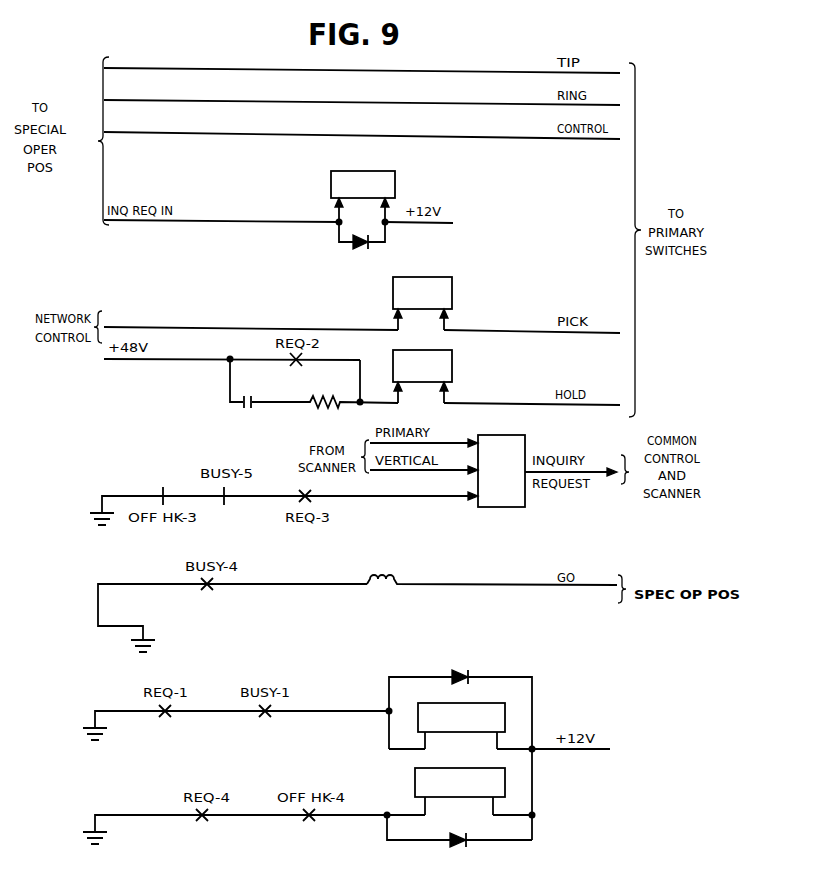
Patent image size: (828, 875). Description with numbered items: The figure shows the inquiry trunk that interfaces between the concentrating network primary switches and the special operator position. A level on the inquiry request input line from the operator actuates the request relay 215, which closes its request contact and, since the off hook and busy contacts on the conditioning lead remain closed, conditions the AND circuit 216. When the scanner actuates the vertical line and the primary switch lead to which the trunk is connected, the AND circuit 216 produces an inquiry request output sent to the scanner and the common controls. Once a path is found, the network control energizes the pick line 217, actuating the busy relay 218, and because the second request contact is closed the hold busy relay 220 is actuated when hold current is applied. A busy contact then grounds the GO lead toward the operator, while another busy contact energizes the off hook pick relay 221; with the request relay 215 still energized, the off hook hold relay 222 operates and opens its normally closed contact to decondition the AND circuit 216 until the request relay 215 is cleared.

The request relay 215 is at (331, 198).
The AND circuit 216 is at (527, 437).
The pick line 217 is at (247, 327).
The busy relay 218 is at (453, 291).
The hold busy relay 220 is at (453, 370).
The off hook pick relay 221 is at (433, 703).
The off hook hold relay 222 is at (415, 784).